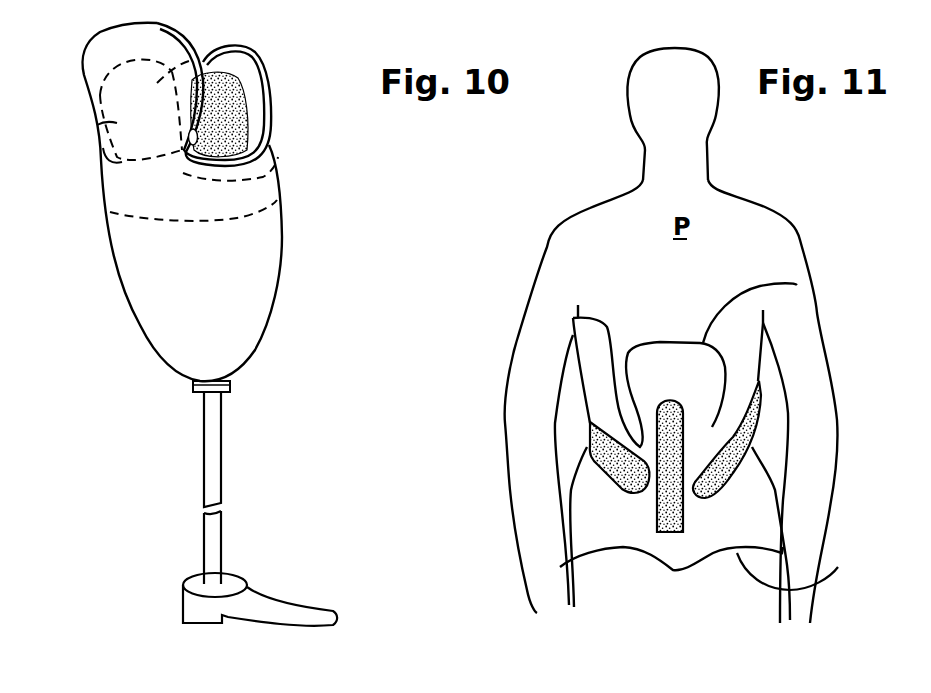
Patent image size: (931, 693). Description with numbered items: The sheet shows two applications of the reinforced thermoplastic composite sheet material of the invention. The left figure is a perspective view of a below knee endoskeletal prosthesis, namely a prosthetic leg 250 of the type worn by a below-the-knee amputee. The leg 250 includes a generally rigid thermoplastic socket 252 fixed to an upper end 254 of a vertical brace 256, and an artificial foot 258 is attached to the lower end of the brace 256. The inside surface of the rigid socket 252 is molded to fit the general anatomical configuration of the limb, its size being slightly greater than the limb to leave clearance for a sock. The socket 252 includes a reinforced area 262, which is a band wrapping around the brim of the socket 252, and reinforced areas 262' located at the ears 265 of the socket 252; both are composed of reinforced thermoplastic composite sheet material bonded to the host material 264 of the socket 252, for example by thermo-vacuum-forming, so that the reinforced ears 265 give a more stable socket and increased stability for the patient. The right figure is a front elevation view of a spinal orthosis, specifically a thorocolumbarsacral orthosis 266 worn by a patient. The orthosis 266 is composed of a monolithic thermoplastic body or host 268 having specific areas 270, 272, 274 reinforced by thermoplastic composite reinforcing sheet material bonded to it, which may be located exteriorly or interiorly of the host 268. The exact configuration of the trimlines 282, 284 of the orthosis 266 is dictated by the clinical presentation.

In FIG. 10, the prosthetic leg 250 is at (204, 324).
In FIG. 10, the rigid thermoplastic socket 252 is at (204, 202).
In FIG. 10, the upper end 254 is at (231, 385).
In FIG. 10, the vertical brace 256 is at (210, 532).
In FIG. 10, the artificial foot 258 is at (270, 603).
In FIG. 10, the reinforced area 262 is at (229, 140).
In FIG. 10, the reinforced area 262' is at (192, 117).
In FIG. 10, the host material 264 is at (260, 272).
In FIG. 10, the ears 265 is at (118, 42).
In FIG. 11, the thorocolumbarsacral orthosis (TLSO) 266 is at (660, 470).
In FIG. 11, the monolithic thermoplastic body 268 is at (677, 550).
In FIG. 11, the reinforced area 270 is at (660, 520).
In FIG. 11, the reinforced area 272 is at (725, 492).
In FIG. 11, the reinforced area 274 is at (613, 472).
In FIG. 11, the trimline 282 is at (722, 560).
In FIG. 11, the trimline 284 is at (797, 285).